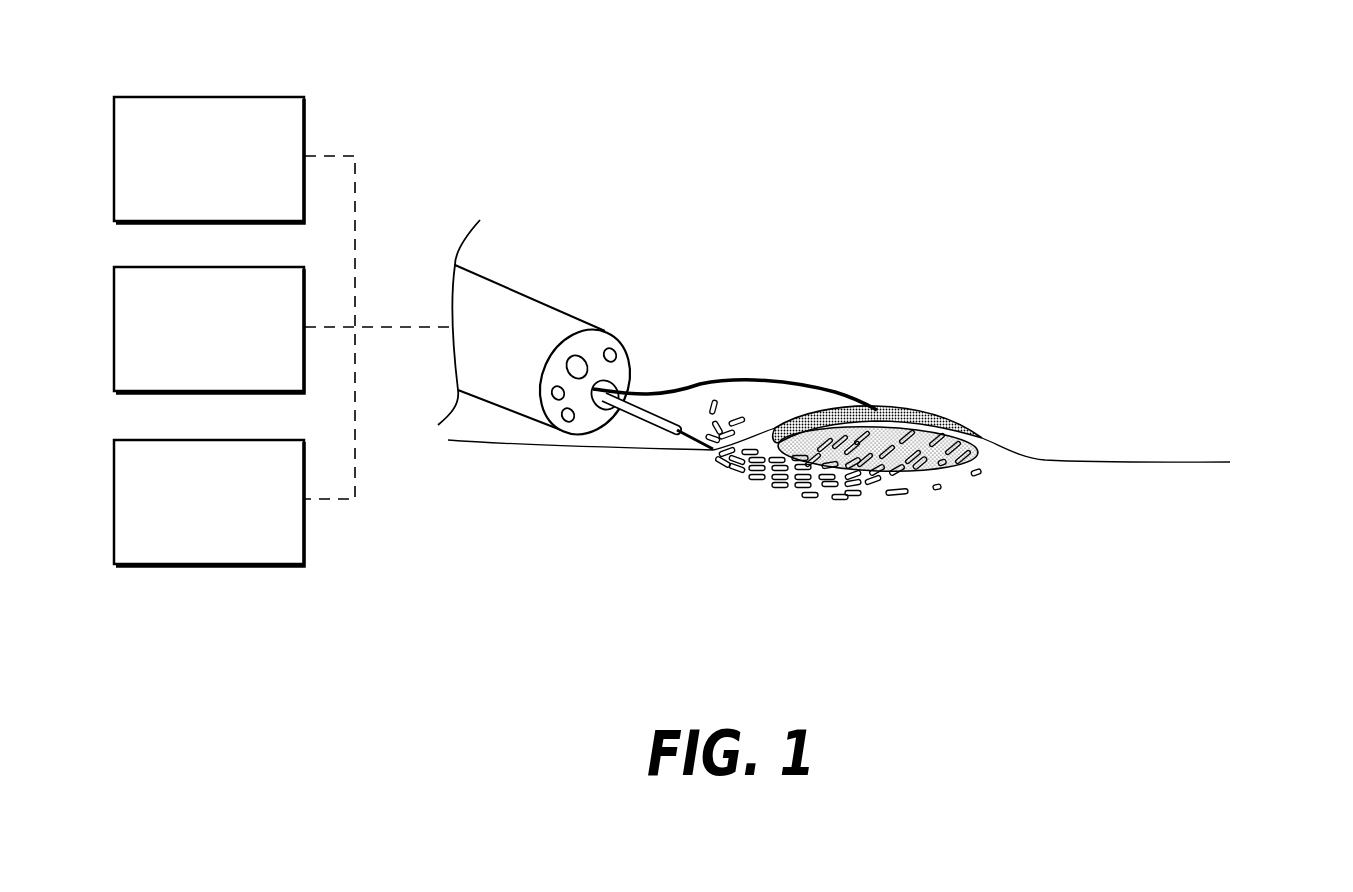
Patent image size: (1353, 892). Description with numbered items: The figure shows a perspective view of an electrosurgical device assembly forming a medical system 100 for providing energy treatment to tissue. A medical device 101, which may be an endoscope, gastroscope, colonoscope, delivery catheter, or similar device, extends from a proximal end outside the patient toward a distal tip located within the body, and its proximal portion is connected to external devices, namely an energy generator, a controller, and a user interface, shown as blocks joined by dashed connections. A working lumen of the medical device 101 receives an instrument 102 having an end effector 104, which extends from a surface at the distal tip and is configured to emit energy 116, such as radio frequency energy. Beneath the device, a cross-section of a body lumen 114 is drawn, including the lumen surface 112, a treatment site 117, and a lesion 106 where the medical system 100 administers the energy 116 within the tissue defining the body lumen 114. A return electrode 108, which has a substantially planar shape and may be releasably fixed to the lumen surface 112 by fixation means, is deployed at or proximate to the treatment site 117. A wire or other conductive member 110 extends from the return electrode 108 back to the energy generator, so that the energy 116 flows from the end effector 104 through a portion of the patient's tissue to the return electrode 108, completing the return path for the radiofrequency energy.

The medical system 100 is at (1190, 227).
The medical device 101 is at (522, 317).
The instrument 102 is at (640, 413).
The end effector 104 is at (697, 438).
The lesion 106 is at (918, 472).
The return electrode 108 is at (953, 413).
The conductive member 110 is at (748, 378).
The lumen surface 112 is at (1118, 463).
The body lumen 114 is at (1136, 337).
The energy 116 is at (953, 472).
The treatment site 117 is at (939, 358).